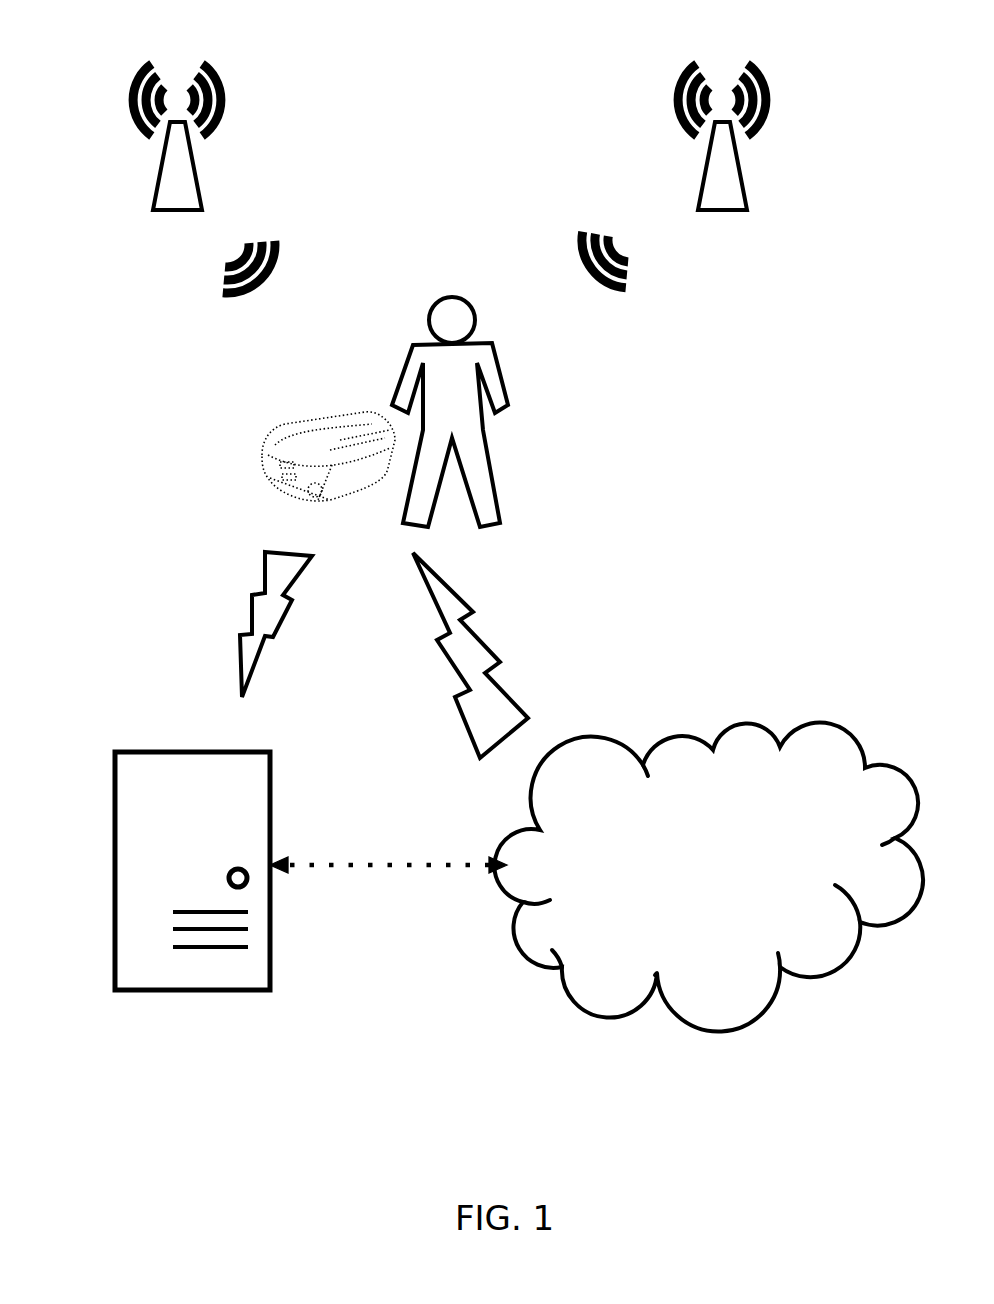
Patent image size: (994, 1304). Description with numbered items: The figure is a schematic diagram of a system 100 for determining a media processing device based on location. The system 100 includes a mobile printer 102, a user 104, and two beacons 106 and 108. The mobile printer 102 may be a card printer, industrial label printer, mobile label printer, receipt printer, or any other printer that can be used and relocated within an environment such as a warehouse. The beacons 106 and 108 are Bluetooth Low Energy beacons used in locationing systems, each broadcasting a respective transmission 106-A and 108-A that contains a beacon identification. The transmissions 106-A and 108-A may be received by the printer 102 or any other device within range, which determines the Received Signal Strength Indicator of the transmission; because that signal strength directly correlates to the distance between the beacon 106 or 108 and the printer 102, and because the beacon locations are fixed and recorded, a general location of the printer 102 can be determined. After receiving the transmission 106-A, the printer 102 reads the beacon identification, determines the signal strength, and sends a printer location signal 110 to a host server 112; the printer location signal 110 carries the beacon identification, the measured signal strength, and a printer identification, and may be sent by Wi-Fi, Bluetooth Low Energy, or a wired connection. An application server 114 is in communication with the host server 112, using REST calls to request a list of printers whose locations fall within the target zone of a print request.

The system 100 is at (434, 28).
The mobile printer 102 is at (278, 433).
The user 104 is at (410, 351).
The beacon 106 is at (112, 80).
The transmission 106-A is at (215, 265).
The beacon 108 is at (660, 76).
The transmission 108-A is at (580, 234).
The printer location signal 110 is at (248, 607).
The host server 112 is at (119, 752).
The application server 114 is at (734, 884).